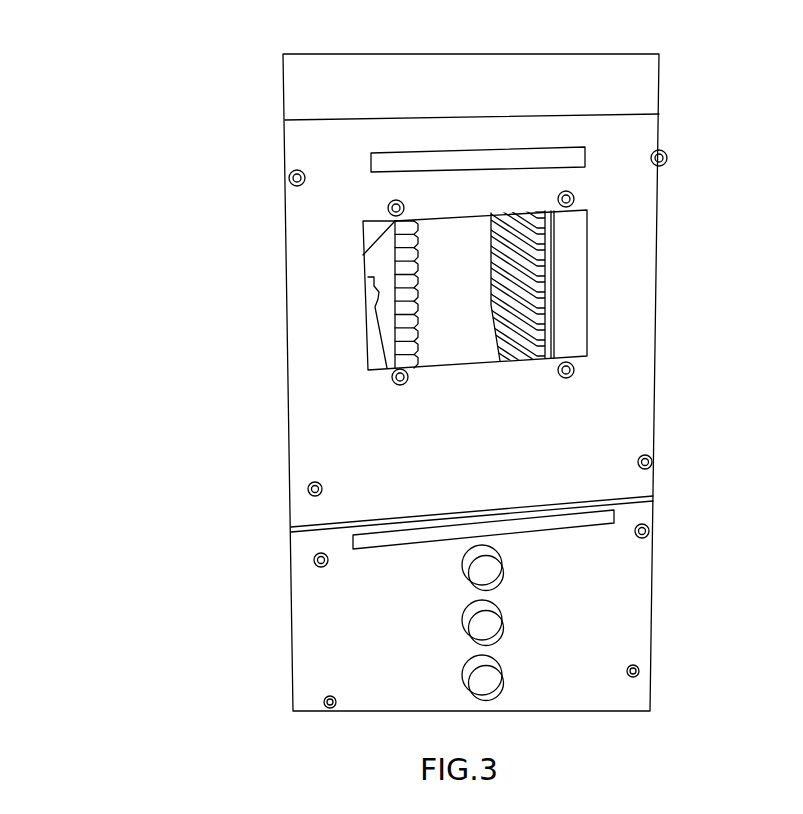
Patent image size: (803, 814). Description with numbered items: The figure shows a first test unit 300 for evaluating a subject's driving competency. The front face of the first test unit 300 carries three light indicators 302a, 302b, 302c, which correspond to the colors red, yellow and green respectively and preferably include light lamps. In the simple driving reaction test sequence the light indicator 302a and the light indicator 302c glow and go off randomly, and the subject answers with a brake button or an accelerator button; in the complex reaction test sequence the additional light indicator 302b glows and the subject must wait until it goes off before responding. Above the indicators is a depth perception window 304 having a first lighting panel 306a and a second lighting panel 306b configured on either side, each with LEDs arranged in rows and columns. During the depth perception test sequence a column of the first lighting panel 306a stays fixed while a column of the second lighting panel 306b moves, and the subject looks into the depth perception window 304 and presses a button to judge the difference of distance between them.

The first test unit 300 is at (80, 28).
The light indicator 302a is at (497, 583).
The light indicator 302b is at (497, 638).
The light indicator 302c is at (499, 689).
The depth perception window 304 is at (572, 283).
The first lighting panel 306a is at (533, 318).
The second lighting panel 306b is at (400, 325).